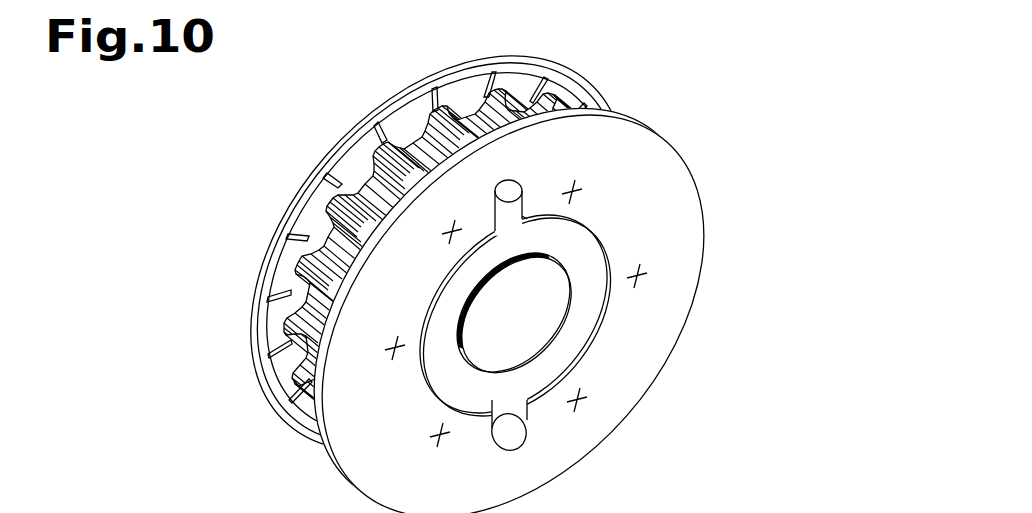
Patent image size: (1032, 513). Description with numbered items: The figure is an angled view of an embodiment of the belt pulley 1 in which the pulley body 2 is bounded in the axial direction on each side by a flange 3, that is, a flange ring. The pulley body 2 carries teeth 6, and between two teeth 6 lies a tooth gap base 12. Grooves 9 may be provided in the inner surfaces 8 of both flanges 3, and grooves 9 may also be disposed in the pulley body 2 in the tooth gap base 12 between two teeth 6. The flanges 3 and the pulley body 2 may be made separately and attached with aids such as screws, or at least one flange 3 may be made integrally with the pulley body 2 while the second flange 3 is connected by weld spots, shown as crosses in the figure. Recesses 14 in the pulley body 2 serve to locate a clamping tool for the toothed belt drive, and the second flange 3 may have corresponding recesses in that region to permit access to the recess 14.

The belt pulley 1 is at (760, 89).
The pulley body 2 is at (254, 396).
The flange 3 is at (310, 160).
The teeth 6 is at (312, 207).
The inner surface 8 is at (282, 338).
The grooves 9 is at (548, 73).
The tooth gap base 12 is at (391, 131).
The recesses 14 is at (530, 432).